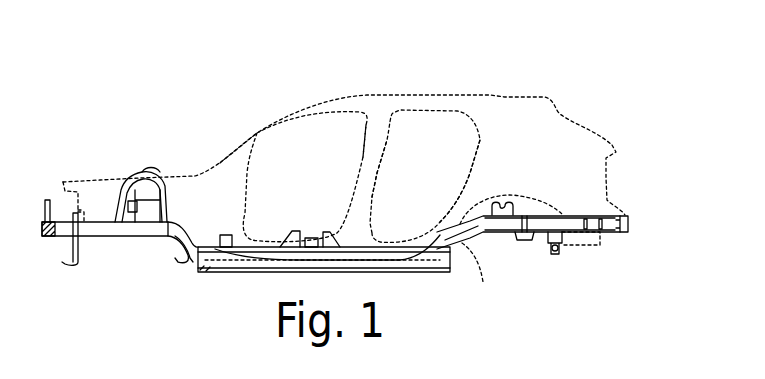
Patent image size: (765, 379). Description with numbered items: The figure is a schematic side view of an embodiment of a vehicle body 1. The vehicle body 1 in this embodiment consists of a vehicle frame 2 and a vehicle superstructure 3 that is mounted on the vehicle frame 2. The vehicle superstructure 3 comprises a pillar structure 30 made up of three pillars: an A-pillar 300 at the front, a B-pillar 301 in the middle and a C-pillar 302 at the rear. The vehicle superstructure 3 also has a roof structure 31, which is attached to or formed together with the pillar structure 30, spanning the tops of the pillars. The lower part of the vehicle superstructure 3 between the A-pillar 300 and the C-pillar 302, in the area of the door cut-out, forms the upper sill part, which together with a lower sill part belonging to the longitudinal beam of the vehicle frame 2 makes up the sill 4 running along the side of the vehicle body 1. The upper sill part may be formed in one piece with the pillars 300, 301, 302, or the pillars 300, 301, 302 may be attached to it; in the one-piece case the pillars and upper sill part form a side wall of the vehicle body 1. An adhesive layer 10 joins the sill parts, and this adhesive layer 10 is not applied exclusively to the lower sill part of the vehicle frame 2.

The vehicle body 1 is at (562, 94).
The vehicle superstructure 3 is at (615, 141).
The A-pillar 300 is at (254, 135).
The roof structure 31 is at (345, 108).
The pillar structure 30 is at (386, 137).
The B-pillar 301 is at (368, 196).
The C-pillar 302 is at (480, 136).
The vehicle frame 2 is at (188, 259).
The sill 4 is at (258, 266).
The adhesive layer 10 is at (462, 238).